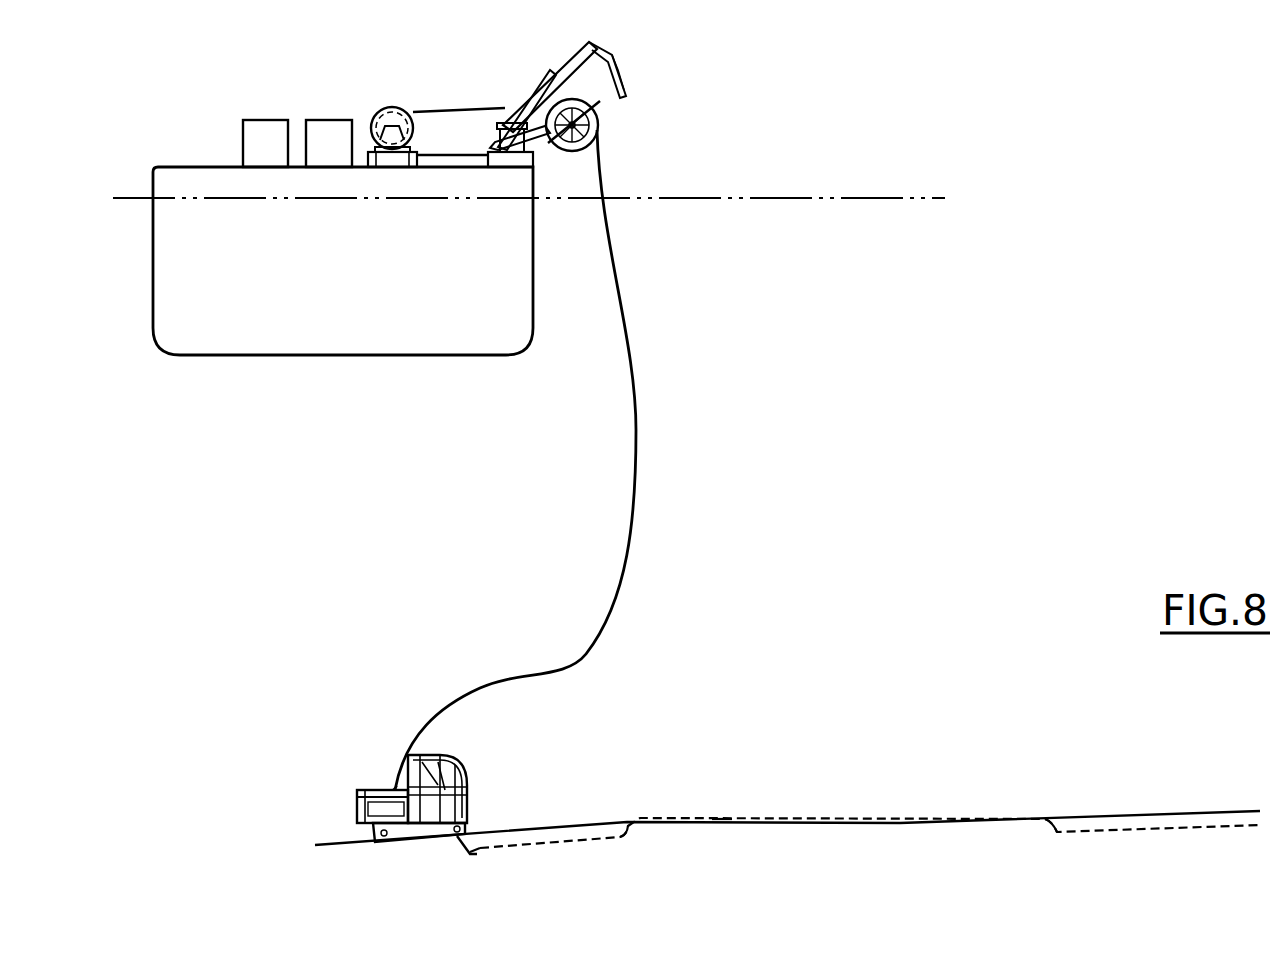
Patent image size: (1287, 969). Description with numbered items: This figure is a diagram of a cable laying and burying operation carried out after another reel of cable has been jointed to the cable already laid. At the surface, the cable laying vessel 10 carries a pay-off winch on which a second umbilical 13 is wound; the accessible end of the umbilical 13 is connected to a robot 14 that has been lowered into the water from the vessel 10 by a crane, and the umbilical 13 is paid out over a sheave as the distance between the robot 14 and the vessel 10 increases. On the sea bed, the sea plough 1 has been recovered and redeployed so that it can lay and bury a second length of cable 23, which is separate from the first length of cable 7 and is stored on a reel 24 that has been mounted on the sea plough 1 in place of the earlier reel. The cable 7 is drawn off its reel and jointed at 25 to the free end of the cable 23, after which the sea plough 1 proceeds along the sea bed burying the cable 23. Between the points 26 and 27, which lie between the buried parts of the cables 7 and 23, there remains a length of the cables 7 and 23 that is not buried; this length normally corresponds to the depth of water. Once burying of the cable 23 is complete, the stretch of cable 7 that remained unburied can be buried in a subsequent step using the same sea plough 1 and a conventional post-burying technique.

The sea plough 1 is at (472, 749).
The cable 7 is at (1153, 827).
The cable laying vessel 10 is at (346, 336).
The second umbilical 13 is at (638, 428).
The robot 14 is at (377, 792).
The second length of cable 23 is at (582, 843).
The reel 24 is at (390, 790).
The joint 25 is at (722, 819).
The point 26 is at (1048, 818).
The point 27 is at (625, 819).